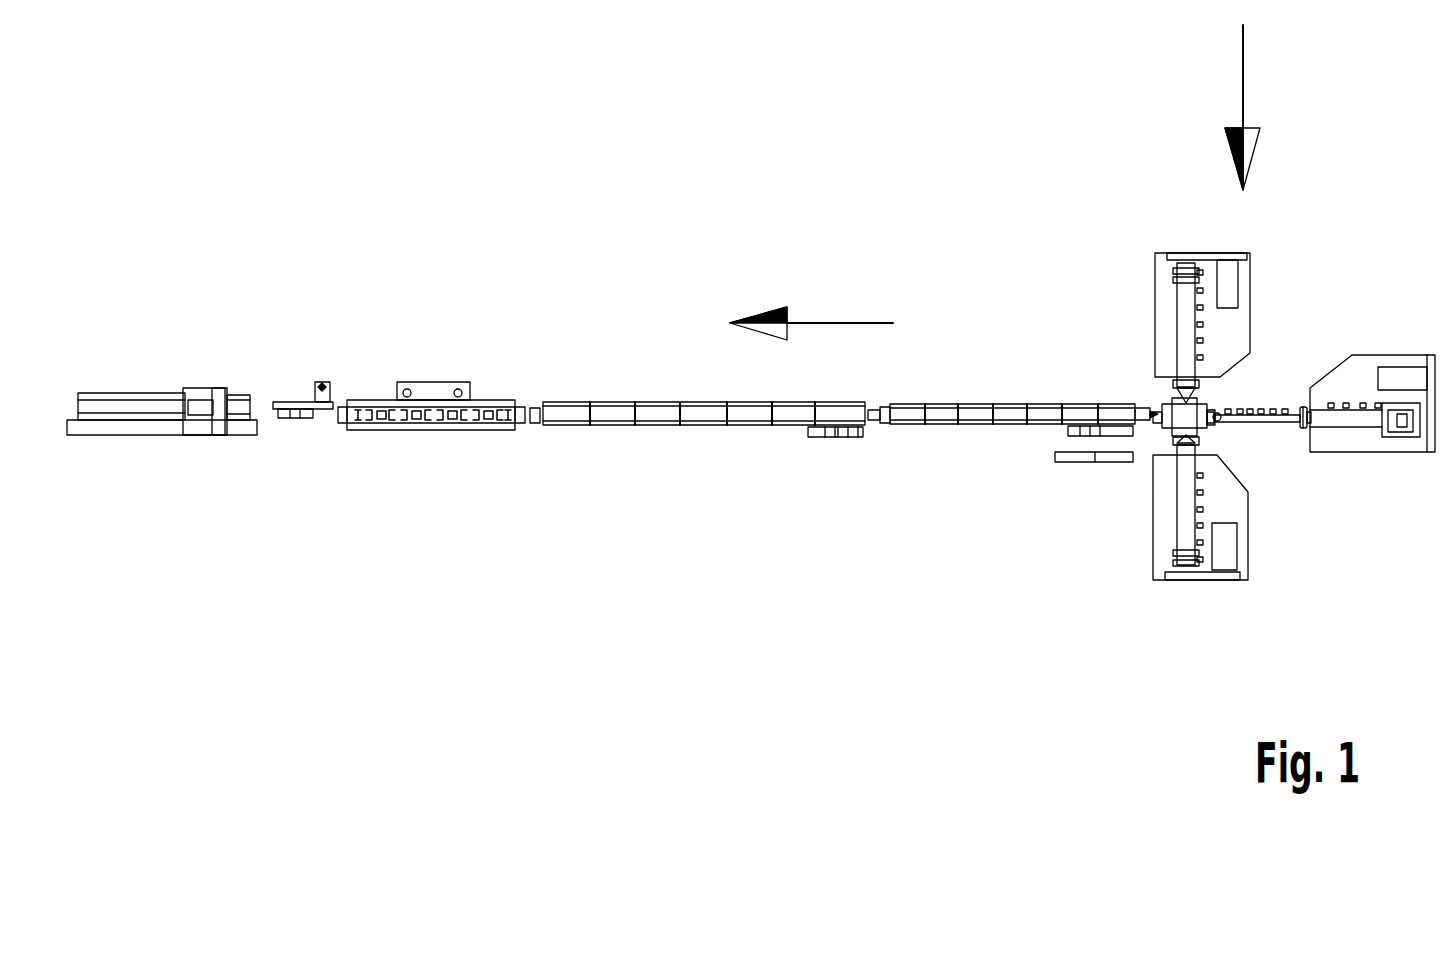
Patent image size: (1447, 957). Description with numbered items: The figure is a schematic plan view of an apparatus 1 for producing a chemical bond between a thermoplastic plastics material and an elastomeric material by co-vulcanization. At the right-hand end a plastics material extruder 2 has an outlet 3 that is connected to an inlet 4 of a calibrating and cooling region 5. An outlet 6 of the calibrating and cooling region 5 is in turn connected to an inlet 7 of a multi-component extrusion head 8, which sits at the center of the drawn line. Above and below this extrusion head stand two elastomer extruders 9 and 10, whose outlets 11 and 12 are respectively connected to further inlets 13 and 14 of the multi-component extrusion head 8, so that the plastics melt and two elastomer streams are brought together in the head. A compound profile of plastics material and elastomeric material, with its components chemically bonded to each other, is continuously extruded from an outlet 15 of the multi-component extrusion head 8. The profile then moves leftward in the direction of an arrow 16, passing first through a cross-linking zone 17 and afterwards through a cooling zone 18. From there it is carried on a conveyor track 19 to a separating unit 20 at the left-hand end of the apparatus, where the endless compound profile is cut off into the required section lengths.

The apparatus 1 is at (1223, 107).
The plastics material extruder 2 is at (1416, 352).
The outlet 3 is at (1288, 406).
The inlet 4 is at (1301, 429).
The calibrating and cooling region 5 is at (1296, 406).
The outlet 6 is at (1210, 421).
The inlet 7 is at (1222, 413).
The multi-component extrusion head 8 is at (1166, 439).
The elastomer extruder 9 is at (1157, 255).
The elastomer extruder 10 is at (1153, 577).
The outlet 11 is at (1200, 398).
The outlet 12 is at (1193, 438).
The further inlet 13 is at (1182, 380).
The further inlet 14 is at (1173, 460).
The outlet 15 is at (1150, 412).
The arrow 16 is at (856, 323).
The cross-linking zone 17 is at (943, 433).
The cooling zone 18 is at (463, 433).
The conveyor track 19 is at (300, 420).
The separating unit 20 is at (120, 437).